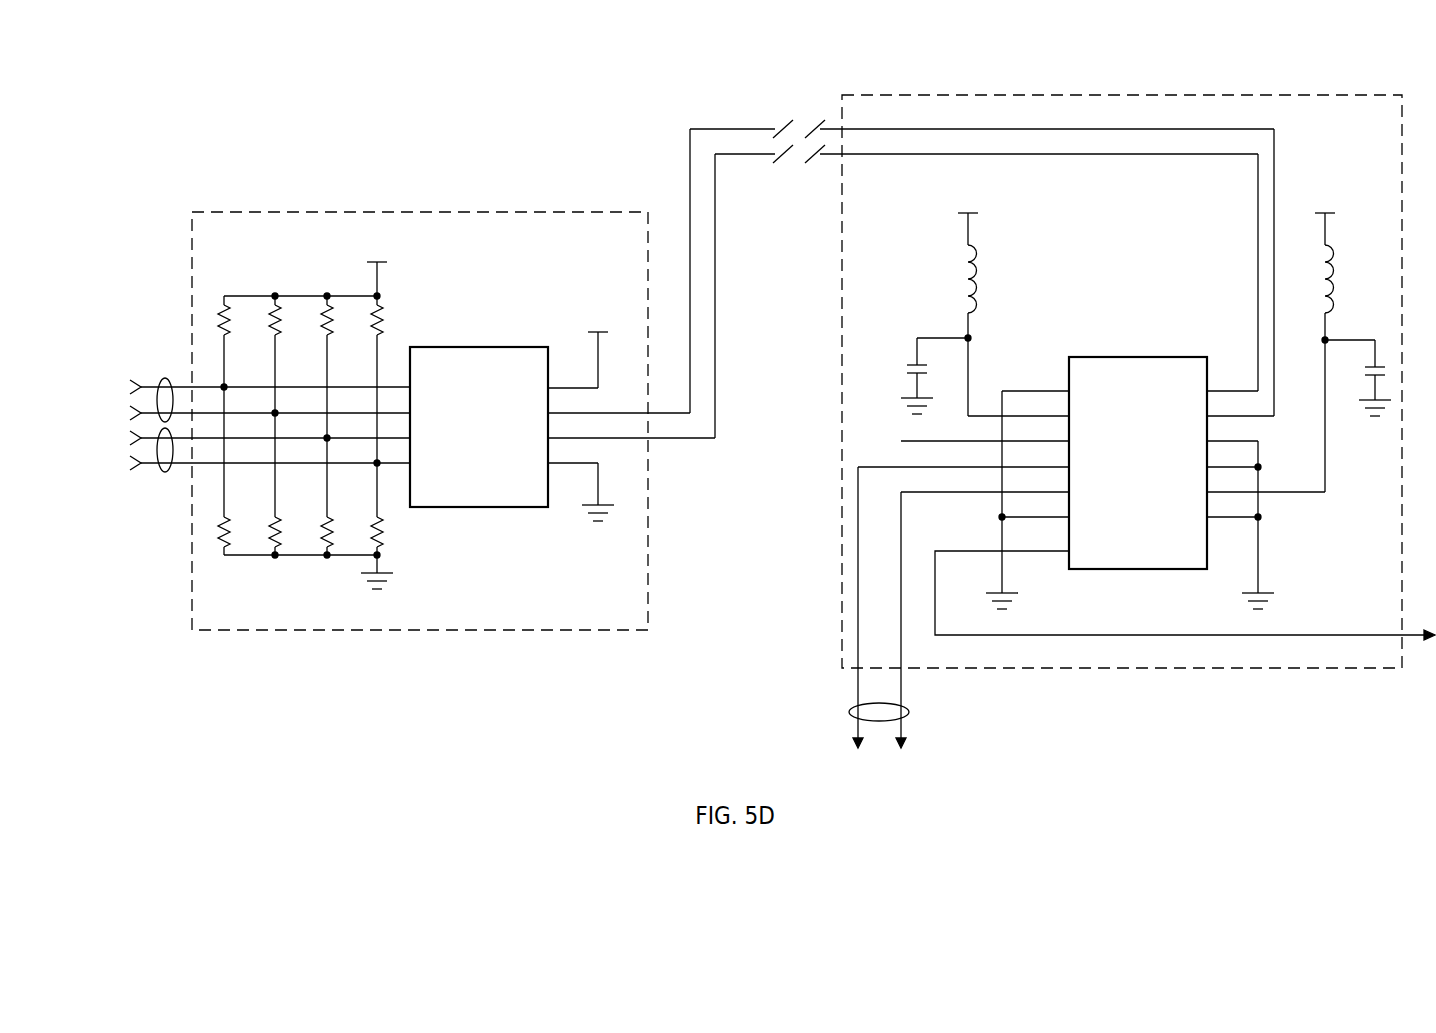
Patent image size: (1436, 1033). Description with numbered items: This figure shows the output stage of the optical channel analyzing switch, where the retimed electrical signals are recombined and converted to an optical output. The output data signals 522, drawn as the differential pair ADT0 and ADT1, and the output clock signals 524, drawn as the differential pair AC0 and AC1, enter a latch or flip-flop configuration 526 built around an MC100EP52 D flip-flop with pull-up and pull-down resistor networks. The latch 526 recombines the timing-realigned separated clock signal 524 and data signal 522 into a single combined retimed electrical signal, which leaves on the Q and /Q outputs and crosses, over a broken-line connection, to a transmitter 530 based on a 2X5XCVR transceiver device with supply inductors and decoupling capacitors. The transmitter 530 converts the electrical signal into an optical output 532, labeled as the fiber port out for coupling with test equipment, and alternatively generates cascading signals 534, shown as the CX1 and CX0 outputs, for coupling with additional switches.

The output data signals 522 is at (165, 378).
The output clock signals 524 is at (165, 472).
The latch or flip-flop configuration 526 is at (469, 288).
The transmitter 530 is at (1323, 143).
The optical output 532 is at (1418, 640).
The cascading signals 534 is at (909, 714).